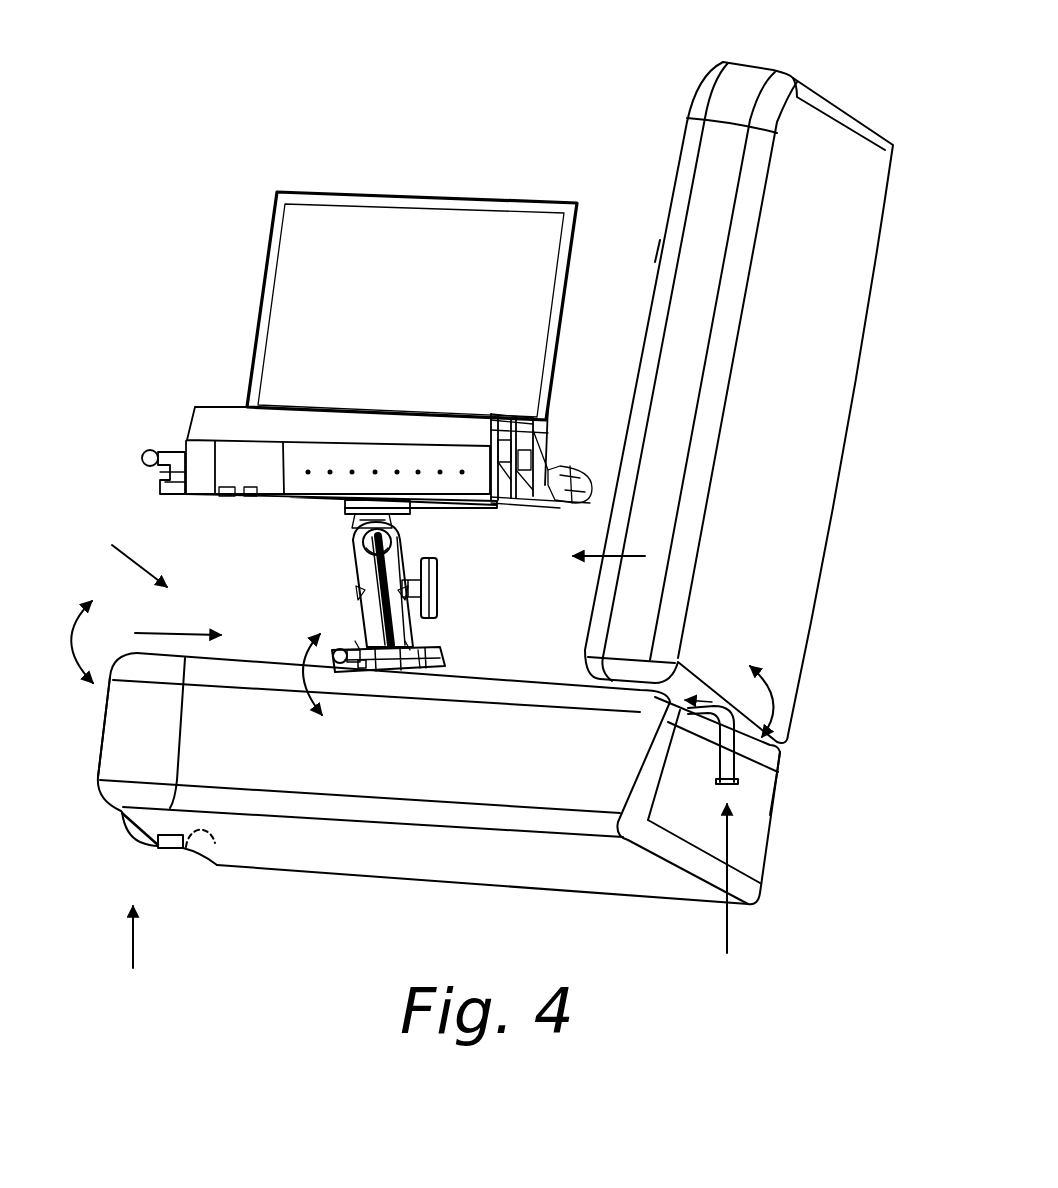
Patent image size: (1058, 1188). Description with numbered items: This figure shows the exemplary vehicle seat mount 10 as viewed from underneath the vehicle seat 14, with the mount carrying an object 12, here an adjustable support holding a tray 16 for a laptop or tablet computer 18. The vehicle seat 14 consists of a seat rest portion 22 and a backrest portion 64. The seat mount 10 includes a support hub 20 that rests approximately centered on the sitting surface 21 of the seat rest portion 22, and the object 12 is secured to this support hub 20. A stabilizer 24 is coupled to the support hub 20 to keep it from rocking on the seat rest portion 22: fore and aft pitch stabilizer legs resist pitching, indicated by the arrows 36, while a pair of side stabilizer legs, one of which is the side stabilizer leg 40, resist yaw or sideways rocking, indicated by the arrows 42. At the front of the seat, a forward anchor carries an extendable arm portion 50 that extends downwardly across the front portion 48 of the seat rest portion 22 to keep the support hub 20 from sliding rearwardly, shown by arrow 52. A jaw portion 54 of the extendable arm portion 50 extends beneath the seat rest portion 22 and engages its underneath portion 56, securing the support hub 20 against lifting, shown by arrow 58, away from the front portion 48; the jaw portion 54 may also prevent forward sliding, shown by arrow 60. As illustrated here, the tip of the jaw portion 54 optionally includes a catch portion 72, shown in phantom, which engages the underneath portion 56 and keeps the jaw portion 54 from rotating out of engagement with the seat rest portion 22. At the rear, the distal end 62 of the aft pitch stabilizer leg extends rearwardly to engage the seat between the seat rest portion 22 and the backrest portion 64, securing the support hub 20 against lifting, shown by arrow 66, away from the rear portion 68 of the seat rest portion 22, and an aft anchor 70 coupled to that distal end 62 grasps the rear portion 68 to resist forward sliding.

The vehicle seat mount 10 is at (124, 553).
The object 12 is at (353, 552).
The vehicle seat 14 is at (684, 122).
The tray 16 is at (243, 460).
The laptop or tablet computer 18 is at (195, 408).
The support hub 20 is at (403, 673).
The sitting surface 21 is at (272, 661).
The seat rest portion 22 is at (333, 857).
The stabilizer 24 is at (337, 648).
The pitching arrows 36 is at (430, 653).
The side stabilizer leg 40 is at (362, 668).
The yaw or sideways rocking arrows 42 is at (334, 684).
The front portion 48 is at (100, 752).
The extendable arm portion 50 is at (132, 840).
The rearward sliding arrow 52 is at (161, 629).
The jaw portion 54 is at (170, 851).
The underneath portion 56 is at (162, 848).
The lifting arrow 58 is at (134, 967).
The forward sliding arrow 60 is at (591, 556).
The distal end of aft pitch stabilizer leg 62 is at (719, 702).
The backrest portion 64 is at (660, 240).
The rear lifting arrow 66 is at (729, 896).
The rear portion 68 is at (778, 773).
The aft seat engaging member or anchor 70 is at (778, 798).
The catch portion 72 is at (205, 845).